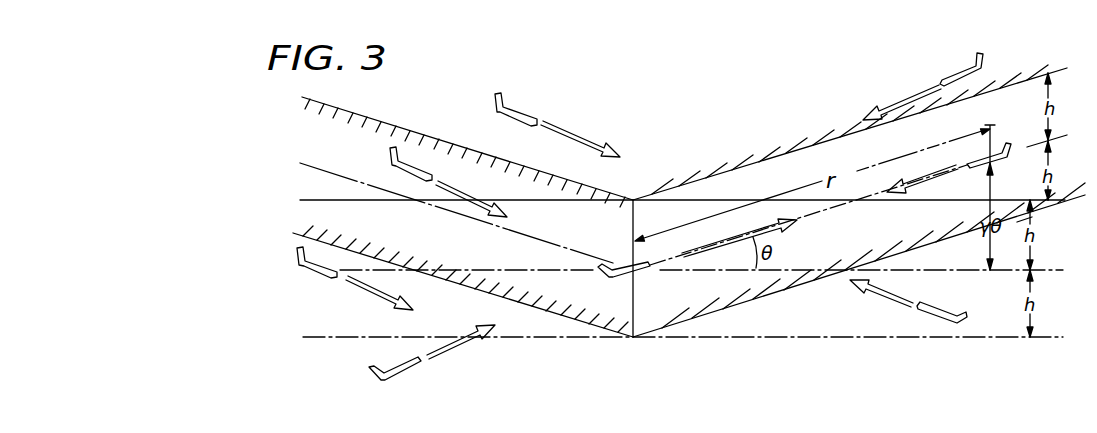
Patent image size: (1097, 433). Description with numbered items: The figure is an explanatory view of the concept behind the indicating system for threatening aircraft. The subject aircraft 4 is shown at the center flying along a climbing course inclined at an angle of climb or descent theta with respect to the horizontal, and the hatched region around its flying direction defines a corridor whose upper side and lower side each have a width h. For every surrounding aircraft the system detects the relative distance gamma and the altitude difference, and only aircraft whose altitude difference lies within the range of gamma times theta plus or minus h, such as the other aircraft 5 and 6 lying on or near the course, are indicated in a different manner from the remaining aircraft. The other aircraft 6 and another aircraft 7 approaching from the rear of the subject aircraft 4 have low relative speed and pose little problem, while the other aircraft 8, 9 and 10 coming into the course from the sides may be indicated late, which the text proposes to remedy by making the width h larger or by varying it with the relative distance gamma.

The subject aircraft 4 is at (616, 278).
The other aircraft 5 is at (372, 372).
The other aircraft 6 is at (415, 163).
The another aircraft 7 is at (302, 262).
The other aircraft 8 is at (524, 107).
The other aircraft 9 is at (943, 80).
The other aircraft 10 is at (942, 323).